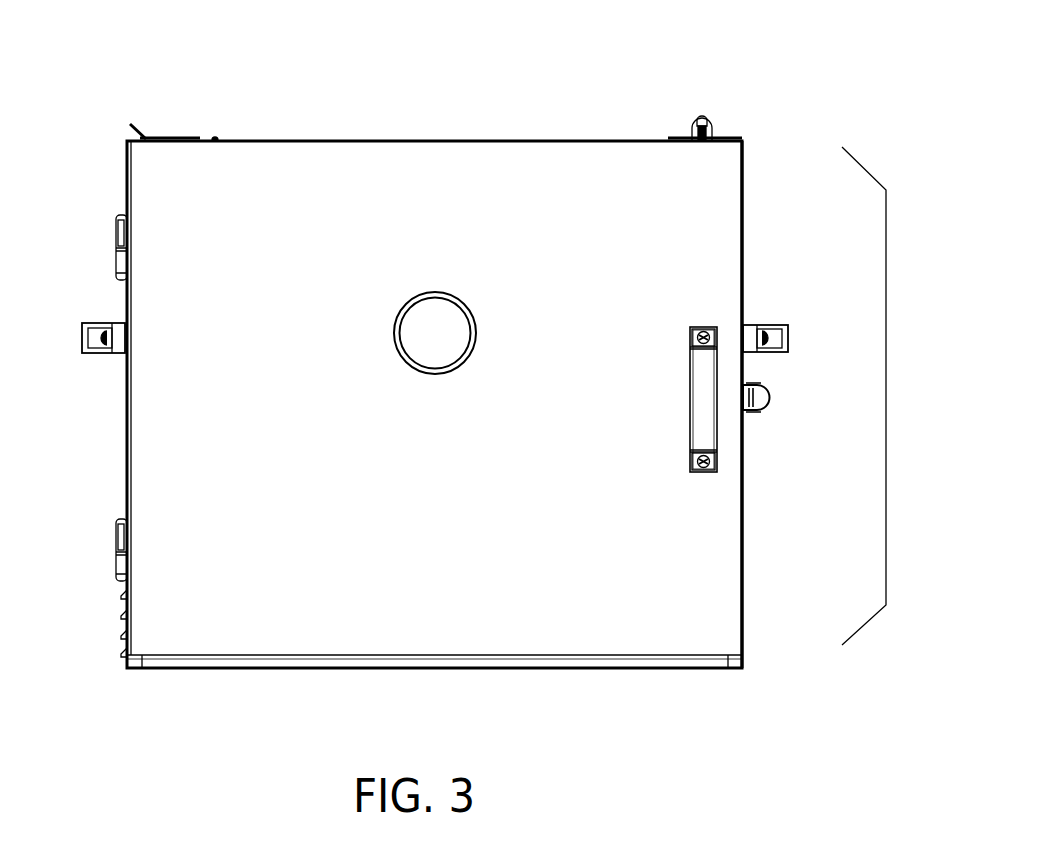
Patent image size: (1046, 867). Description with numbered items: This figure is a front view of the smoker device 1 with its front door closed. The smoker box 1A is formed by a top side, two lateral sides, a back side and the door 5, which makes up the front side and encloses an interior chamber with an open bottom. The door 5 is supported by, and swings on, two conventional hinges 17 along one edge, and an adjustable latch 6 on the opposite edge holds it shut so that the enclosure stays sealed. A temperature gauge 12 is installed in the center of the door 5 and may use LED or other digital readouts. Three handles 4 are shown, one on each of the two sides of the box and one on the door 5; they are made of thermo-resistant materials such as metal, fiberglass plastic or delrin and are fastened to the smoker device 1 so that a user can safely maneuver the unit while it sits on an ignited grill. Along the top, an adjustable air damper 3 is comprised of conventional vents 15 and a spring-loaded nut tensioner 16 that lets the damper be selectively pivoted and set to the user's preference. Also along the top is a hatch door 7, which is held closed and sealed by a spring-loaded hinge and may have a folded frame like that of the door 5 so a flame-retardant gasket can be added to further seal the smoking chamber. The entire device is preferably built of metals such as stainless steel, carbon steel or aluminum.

The smoker device 1 is at (489, 141).
The smoker box 1A is at (886, 398).
The adjustable air damper 3 is at (718, 141).
The handles 4 is at (93, 323).
The door 5 is at (742, 503).
The adjustable latch 6 is at (756, 412).
The hatch door 7 is at (180, 139).
The temperature gauge 12 is at (420, 372).
The vents 15 is at (692, 130).
The spring-loaded nut tensioner 16 is at (701, 118).
The hinges 17 is at (121, 217).